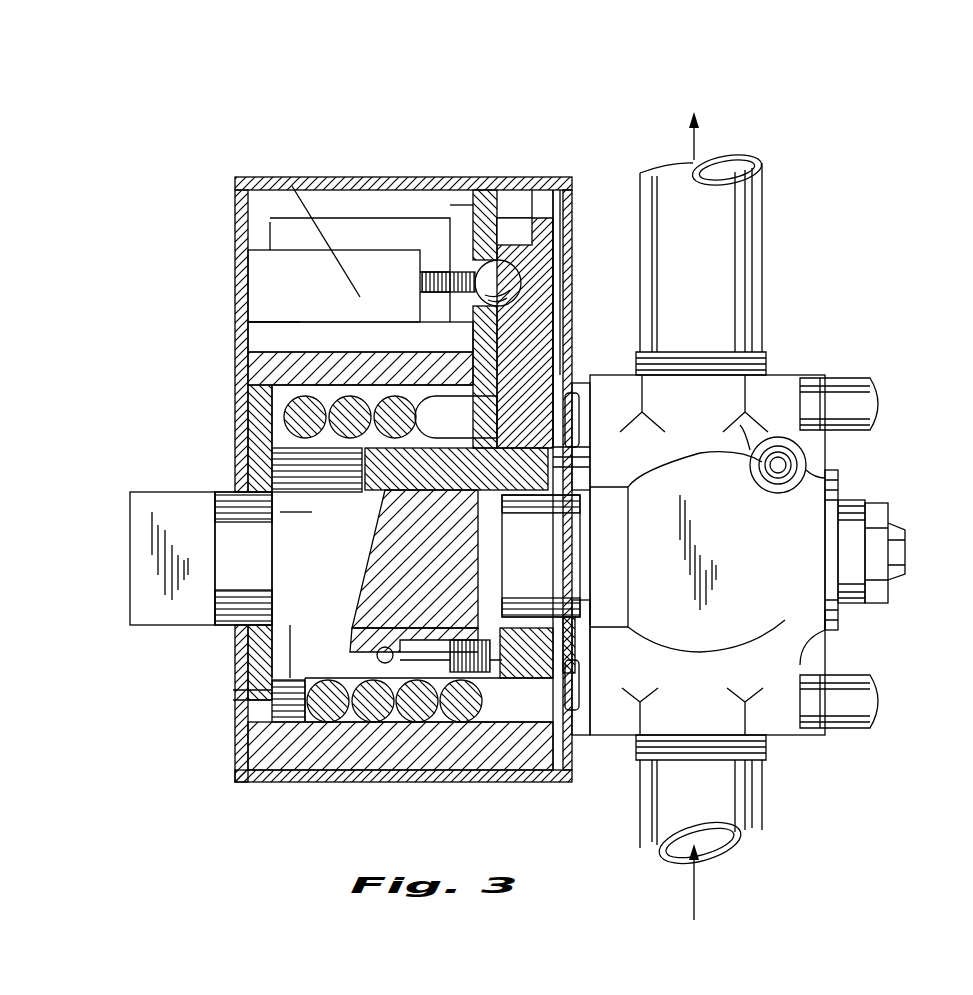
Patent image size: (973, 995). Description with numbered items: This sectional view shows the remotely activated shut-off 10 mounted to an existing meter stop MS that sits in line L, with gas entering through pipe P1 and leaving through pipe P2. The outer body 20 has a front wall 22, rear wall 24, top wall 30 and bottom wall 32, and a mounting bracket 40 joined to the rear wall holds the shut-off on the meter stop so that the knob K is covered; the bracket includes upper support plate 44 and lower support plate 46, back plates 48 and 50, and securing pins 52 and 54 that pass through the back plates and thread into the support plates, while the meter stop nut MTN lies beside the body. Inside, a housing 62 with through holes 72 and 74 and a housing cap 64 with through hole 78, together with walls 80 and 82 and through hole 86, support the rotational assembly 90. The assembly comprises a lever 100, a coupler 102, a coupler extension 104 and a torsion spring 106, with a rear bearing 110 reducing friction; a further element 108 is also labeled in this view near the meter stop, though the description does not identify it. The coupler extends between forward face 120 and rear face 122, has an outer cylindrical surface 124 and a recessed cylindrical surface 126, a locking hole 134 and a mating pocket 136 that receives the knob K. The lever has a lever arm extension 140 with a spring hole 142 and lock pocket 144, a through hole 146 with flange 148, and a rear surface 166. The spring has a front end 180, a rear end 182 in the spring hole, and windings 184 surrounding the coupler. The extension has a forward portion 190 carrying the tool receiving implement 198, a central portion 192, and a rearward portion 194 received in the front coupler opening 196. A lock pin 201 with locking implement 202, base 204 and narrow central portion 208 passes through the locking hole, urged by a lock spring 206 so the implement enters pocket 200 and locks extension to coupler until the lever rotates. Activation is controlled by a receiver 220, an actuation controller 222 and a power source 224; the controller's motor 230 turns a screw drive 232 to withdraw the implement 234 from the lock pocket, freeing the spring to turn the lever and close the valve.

The remotely activated shut-off 10 is at (579, 172).
The outer body 20 is at (363, 172).
The front wall 22 is at (238, 270).
The rear wall 24 is at (573, 205).
The top wall 30 is at (322, 176).
The bottom wall 32 is at (370, 715).
The mounting bracket 40 is at (589, 375).
The upper support plate 44 is at (588, 412).
The lower support plate 46 is at (582, 735).
The back plate 48 is at (844, 380).
The back plate 50 is at (843, 728).
The securing pin 52 is at (885, 410).
The securing pin 54 is at (885, 702).
The housing 62 is at (240, 372).
The housing cap 64 is at (536, 176).
The through hole 72 is at (255, 497).
The through hole 74 is at (262, 688).
The through hole 78 is at (510, 362).
The wall 80 is at (345, 355).
The wall 82 is at (470, 212).
The through hole 86 is at (430, 292).
The rotational assembly 90 is at (262, 648).
The lever 100 is at (490, 176).
The coupler 102 is at (360, 368).
The coupler extension 104 is at (157, 487).
The torsion spring 106 is at (420, 745).
The bore 108 is at (625, 498).
The rear bearing 110 is at (595, 427).
The forward face 120 is at (317, 536).
The rear face 122 is at (600, 458).
The outer cylindrical surface 124 is at (458, 445).
The cylindrical surface 126 is at (527, 648).
The locking hole 134 is at (397, 648).
The mating pocket 136 is at (480, 522).
The lever arm extension 140 is at (565, 235).
The spring hole 142 is at (402, 440).
The lock pocket 144 is at (470, 318).
The through hole 146 is at (508, 452).
The flange 148 is at (632, 610).
The rear surface 166 is at (566, 290).
The front end 180 is at (255, 715).
The rear end 182 is at (372, 404).
The windings 184 is at (365, 680).
The forward portion 190 is at (187, 505).
The central portion 192 is at (328, 556).
The rearward portion 194 is at (482, 552).
The front coupler opening 196 is at (430, 500).
The tool receiving implement 198 is at (162, 612).
The pocket 200 is at (388, 645).
The lock pin 201 is at (408, 640).
The locking implement 202 is at (400, 746).
The base 204 is at (521, 696).
The lock spring 206 is at (429, 721).
The narrow central portion 208 is at (437, 645).
The receiver 220 is at (246, 324).
The actuation controller 222 is at (290, 182).
The power source 224 is at (278, 220).
The motor 230 is at (383, 272).
The screw drive 232 is at (420, 176).
The implement 234 is at (565, 252).
The knob K is at (565, 556).
The line L is at (699, 504).
The meter stop MS is at (807, 587).
The meter stop nut MTN is at (891, 521).
The pipe P1 is at (765, 800).
The pipe P2 is at (765, 237).